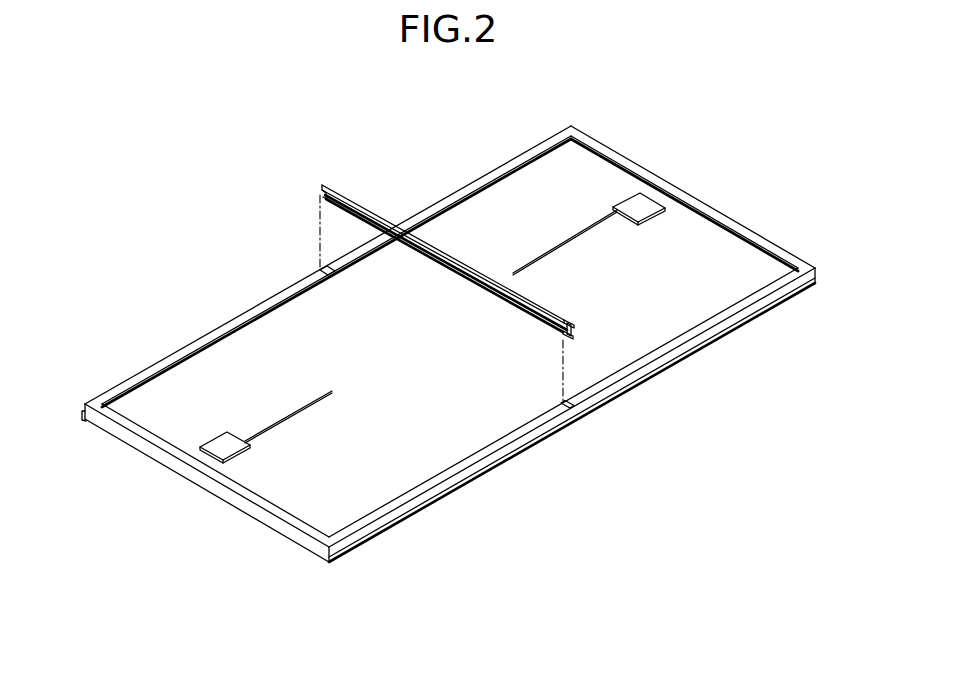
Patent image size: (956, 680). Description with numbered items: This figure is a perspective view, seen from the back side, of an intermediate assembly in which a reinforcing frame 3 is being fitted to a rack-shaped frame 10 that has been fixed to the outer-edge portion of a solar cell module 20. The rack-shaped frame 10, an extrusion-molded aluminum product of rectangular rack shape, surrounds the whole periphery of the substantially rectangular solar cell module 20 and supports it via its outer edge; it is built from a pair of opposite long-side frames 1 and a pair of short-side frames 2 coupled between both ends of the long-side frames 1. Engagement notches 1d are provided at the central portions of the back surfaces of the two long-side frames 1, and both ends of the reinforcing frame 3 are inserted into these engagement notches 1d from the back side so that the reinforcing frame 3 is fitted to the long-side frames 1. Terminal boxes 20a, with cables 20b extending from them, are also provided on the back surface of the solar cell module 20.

The rack-shaped frame 10 is at (448, 329).
The long-side frame 1 is at (427, 207).
The short-side frame 2 is at (664, 179).
The engagement notch 1d is at (325, 270).
The reinforcing frame 3 is at (461, 263).
The solar cell module 20 is at (423, 452).
The terminal box 20a is at (657, 223).
The cable 20b is at (563, 238).